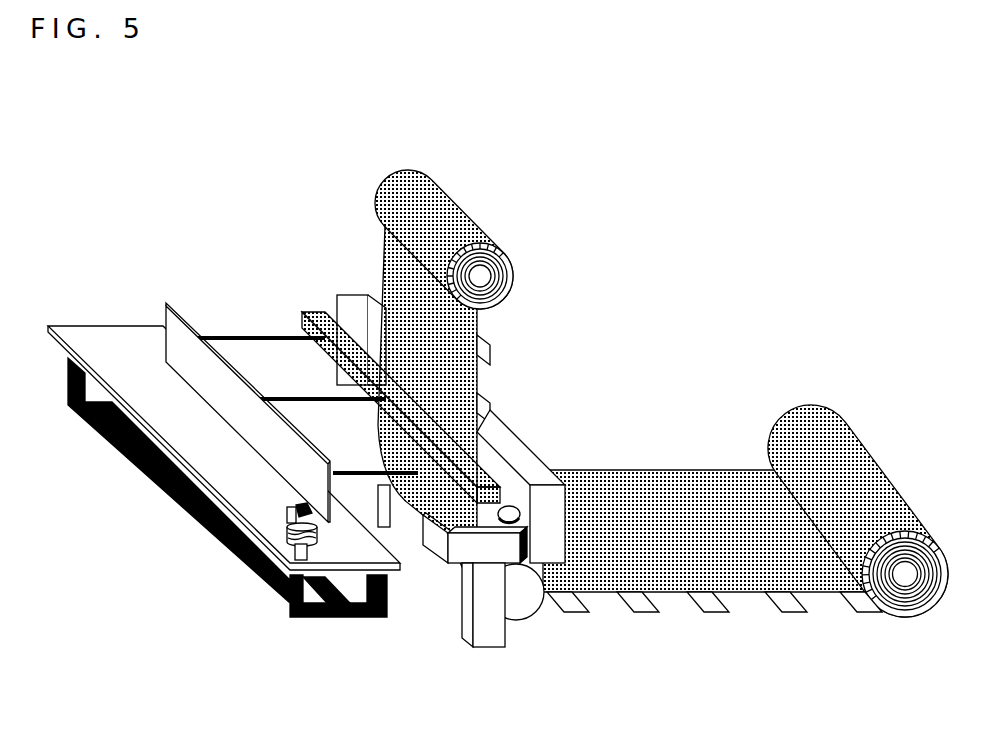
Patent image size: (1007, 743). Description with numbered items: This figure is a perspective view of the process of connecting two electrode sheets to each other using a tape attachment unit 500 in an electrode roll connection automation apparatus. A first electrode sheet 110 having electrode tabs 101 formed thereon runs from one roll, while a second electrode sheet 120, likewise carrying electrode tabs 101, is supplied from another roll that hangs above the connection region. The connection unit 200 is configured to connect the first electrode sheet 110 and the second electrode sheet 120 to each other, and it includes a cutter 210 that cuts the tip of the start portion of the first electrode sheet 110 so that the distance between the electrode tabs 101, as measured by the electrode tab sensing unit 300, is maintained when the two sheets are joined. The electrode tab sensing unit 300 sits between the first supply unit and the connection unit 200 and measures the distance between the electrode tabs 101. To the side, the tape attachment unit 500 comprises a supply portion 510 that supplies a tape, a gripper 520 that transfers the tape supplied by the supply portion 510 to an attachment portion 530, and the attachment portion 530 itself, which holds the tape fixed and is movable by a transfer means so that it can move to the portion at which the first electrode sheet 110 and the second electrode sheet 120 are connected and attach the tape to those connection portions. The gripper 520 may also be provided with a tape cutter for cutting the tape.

The tape attachment unit 500 is at (104, 308).
The supply portion 510 is at (288, 535).
The gripper 520 is at (286, 508).
The attachment portion 530 is at (302, 312).
The second electrode sheet 120 is at (373, 198).
The connection unit 200 is at (513, 383).
The cutter 210 is at (506, 506).
The first electrode sheet 110 is at (663, 487).
The electrode tabs 101 is at (723, 607).
The electrode tab sensing unit 300 is at (519, 648).